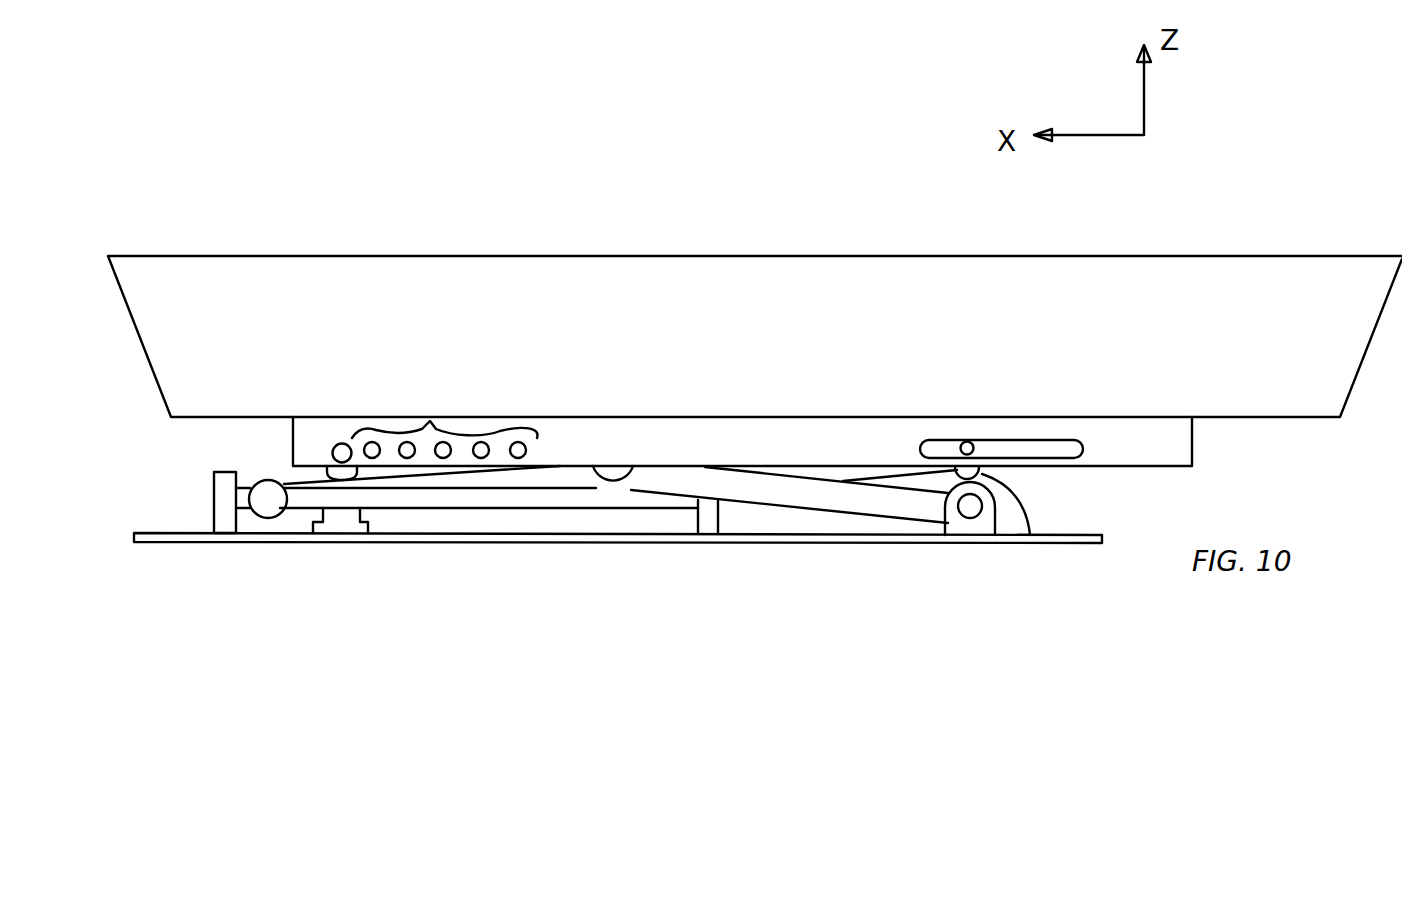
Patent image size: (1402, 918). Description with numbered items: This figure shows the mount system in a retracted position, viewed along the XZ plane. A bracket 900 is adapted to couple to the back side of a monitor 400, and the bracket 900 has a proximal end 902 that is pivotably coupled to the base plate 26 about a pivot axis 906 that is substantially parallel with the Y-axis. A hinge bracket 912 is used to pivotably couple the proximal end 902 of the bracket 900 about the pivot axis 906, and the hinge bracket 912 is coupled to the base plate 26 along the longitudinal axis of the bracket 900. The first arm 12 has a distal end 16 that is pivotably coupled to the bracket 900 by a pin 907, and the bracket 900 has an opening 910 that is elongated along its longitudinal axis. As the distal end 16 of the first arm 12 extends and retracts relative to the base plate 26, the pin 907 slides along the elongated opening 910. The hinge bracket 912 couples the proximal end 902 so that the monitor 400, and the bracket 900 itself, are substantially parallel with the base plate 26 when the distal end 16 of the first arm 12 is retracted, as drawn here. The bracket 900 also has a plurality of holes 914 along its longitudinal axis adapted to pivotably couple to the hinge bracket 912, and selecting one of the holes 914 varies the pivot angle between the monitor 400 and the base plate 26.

The monitor 400 is at (726, 353).
The proximal end 902 is at (300, 440).
The pivot axis 906 is at (342, 445).
The holes 914 is at (480, 427).
The bracket 900 is at (773, 443).
The opening 910 is at (1053, 442).
The pin 907 is at (969, 441).
The first arm 12 is at (537, 478).
The hinge bracket 912 is at (347, 513).
The base plate 26 is at (807, 543).
The distal end 16 is at (1030, 537).